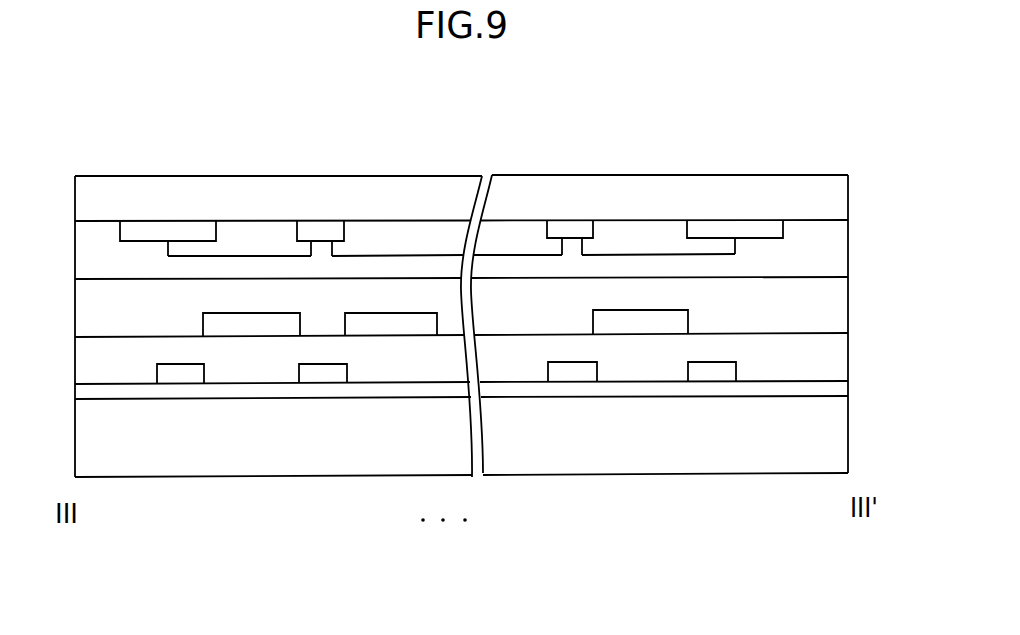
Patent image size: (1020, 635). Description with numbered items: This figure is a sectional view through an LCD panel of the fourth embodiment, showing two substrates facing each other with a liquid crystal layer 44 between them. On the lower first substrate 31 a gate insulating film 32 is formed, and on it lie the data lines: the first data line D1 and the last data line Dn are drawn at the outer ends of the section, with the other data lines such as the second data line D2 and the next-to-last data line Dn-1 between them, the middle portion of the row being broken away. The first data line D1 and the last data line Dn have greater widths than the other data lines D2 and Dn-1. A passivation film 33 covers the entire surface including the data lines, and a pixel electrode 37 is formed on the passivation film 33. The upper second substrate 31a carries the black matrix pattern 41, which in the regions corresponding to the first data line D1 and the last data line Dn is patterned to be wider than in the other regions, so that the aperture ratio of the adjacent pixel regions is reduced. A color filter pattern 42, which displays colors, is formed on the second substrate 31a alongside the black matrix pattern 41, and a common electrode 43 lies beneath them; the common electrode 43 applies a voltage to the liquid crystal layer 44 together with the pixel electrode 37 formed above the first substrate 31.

The first substrate 31 is at (843, 433).
The second substrate 31a is at (843, 194).
The gate insulating film 32 is at (843, 385).
The passivation film 33 is at (843, 355).
The pixel electrode 37 is at (378, 322).
The black matrix pattern 41 is at (178, 232).
The color filter pattern 42 is at (737, 243).
The common electrode 43 is at (843, 265).
The liquid crystal layer 44 is at (843, 305).
The first data line D1 is at (180, 375).
The second data line D2 is at (323, 375).
The (n-1)th data line Dn-1 is at (572, 373).
The last data line Dn is at (713, 373).